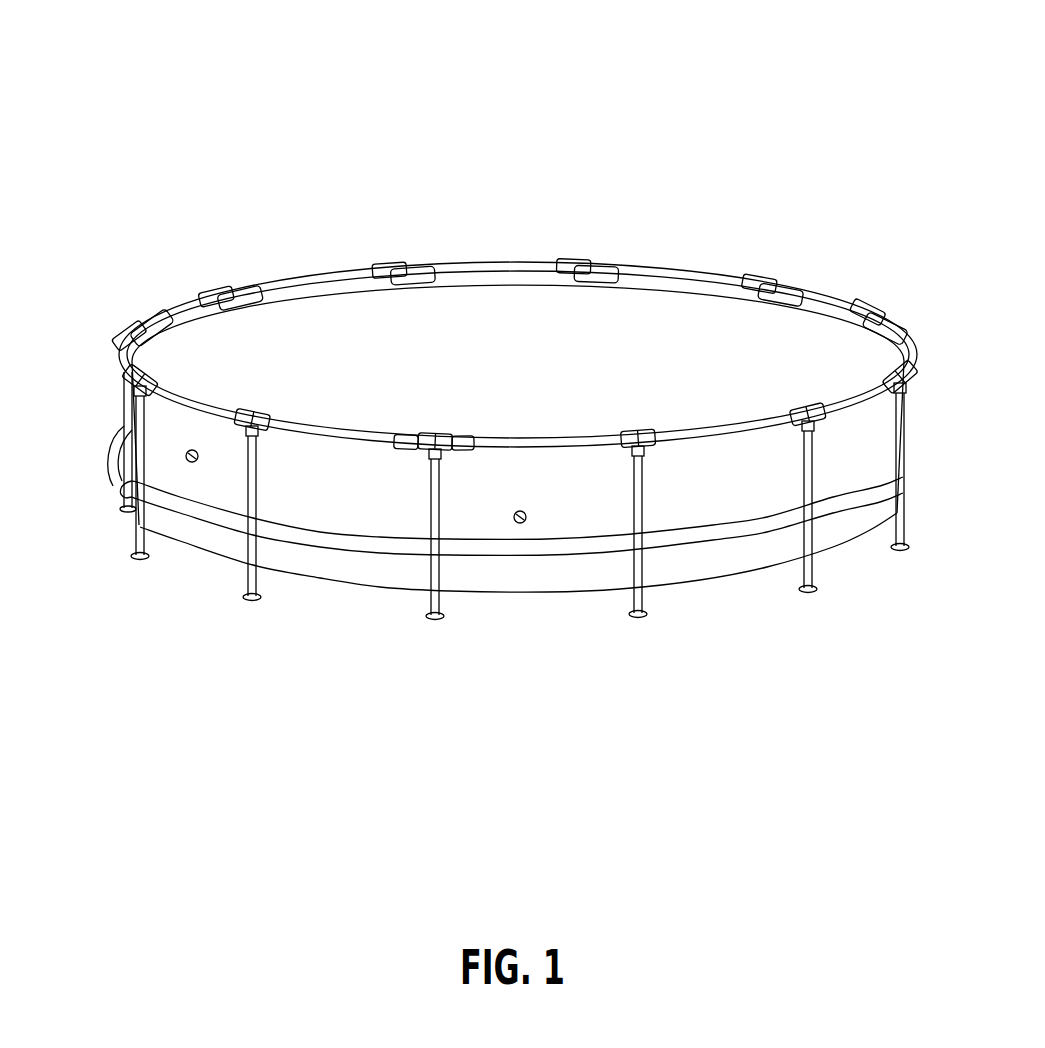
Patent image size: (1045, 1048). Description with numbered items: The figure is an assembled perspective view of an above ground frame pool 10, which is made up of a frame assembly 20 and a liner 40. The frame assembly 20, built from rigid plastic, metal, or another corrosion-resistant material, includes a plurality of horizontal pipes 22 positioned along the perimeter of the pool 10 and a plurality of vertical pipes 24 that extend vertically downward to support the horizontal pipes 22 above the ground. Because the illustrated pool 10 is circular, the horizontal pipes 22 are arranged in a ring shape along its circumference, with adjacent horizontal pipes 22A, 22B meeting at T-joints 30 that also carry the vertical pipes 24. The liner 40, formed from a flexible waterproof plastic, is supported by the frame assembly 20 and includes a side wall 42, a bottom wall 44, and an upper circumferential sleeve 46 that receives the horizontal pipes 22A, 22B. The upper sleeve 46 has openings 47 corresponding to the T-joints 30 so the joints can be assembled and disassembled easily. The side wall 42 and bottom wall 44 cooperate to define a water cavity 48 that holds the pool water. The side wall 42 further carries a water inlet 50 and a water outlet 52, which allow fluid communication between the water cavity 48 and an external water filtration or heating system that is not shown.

The above ground frame pool 10 is at (801, 107).
The frame assembly 20 is at (275, 256).
The horizontal pipes 22 is at (421, 264).
The horizontal pipe 22A is at (403, 436).
The horizontal pipe 22B is at (472, 438).
The T-joint 30 is at (449, 436).
The vertical pipes 24 is at (428, 609).
The opening 47 is at (791, 276).
The water cavity 48 is at (617, 333).
The liner 40 is at (858, 579).
The side wall 42 is at (730, 563).
The bottom wall 44 is at (540, 592).
The upper circumferential sleeve 46 is at (542, 445).
The water inlet 50 is at (185, 459).
The water outlet 52 is at (518, 523).